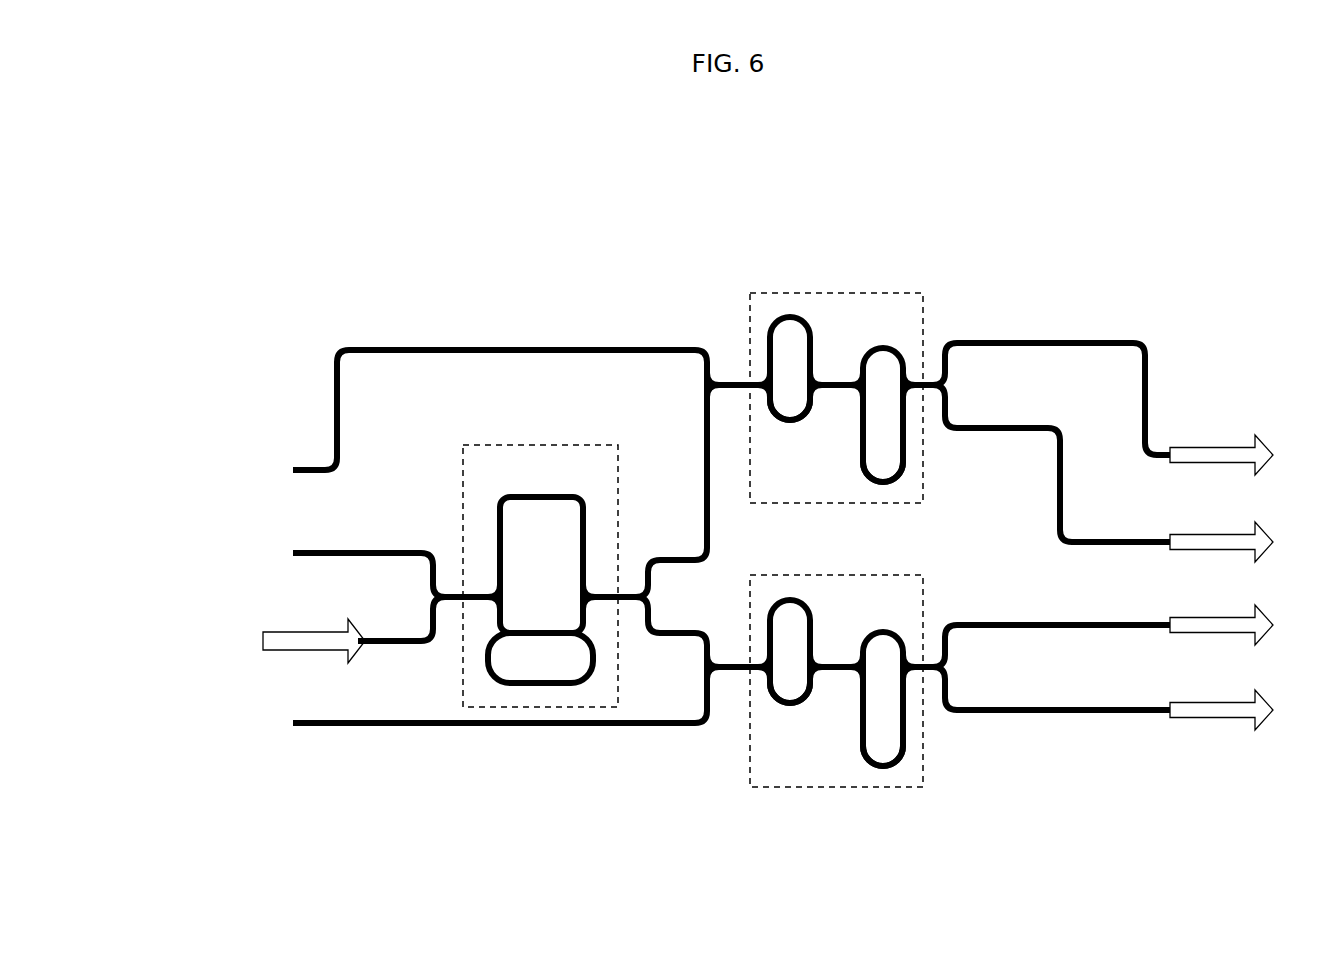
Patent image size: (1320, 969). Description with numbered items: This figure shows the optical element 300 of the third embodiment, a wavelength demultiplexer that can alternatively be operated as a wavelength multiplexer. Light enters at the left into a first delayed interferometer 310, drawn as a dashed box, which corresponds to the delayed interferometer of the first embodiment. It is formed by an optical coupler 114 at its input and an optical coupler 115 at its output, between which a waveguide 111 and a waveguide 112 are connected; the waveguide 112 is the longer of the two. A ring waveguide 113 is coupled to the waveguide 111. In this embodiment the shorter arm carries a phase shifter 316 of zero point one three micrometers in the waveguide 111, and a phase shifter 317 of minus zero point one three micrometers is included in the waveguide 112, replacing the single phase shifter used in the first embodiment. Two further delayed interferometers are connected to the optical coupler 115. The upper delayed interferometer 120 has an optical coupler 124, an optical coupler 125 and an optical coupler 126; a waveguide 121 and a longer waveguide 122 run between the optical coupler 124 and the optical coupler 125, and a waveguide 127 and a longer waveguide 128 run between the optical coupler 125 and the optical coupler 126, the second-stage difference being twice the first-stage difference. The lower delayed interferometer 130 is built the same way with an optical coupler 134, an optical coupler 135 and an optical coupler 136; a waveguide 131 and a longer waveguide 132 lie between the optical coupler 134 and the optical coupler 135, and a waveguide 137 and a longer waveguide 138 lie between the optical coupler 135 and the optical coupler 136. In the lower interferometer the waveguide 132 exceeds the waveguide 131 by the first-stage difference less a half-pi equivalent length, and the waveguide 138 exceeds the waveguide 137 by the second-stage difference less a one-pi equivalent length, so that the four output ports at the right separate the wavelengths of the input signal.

The optical element 300 is at (1073, 193).
The input section 310 is at (497, 443).
The phase shifter 317 is at (495, 592).
The phase shifter 316 is at (497, 604).
The optical coupler 114 is at (497, 592).
The waveguide 111 is at (498, 617).
The waveguide 112 is at (540, 497).
The ring waveguide 113 is at (538, 685).
The optical coupler 115 is at (604, 594).
The optical coupler 124 is at (757, 383).
The delayed interferometer 120 is at (803, 292).
The waveguide 122 is at (790, 317).
The waveguide 121 is at (790, 422).
The optical coupler 125 is at (833, 383).
The waveguide 127 is at (880, 348).
The waveguide 128 is at (880, 484).
The optical coupler 126 is at (913, 392).
The delayed interferometer 130 is at (748, 703).
The optical coupler 134 is at (757, 664).
The waveguide 132 is at (790, 600).
The waveguide 131 is at (790, 703).
The optical coupler 135 is at (835, 670).
The waveguide 137 is at (880, 632).
The waveguide 138 is at (880, 766).
The optical coupler 136 is at (913, 675).